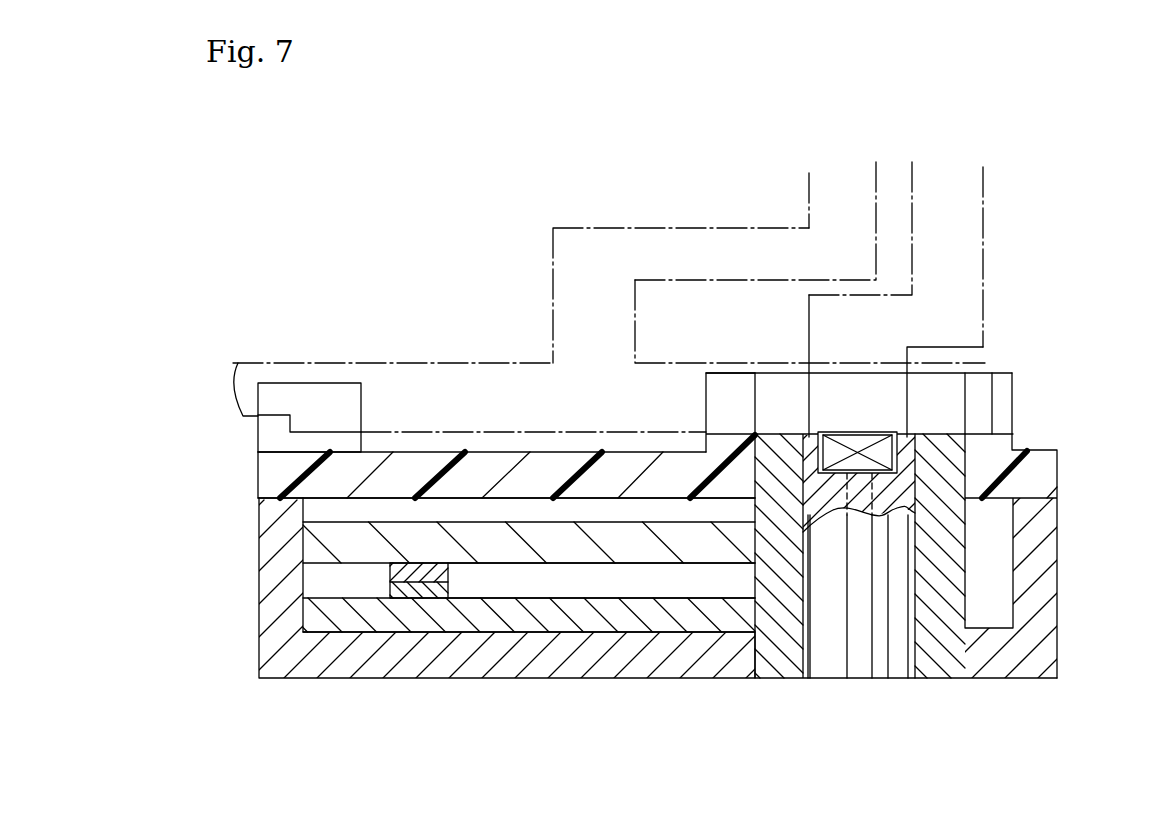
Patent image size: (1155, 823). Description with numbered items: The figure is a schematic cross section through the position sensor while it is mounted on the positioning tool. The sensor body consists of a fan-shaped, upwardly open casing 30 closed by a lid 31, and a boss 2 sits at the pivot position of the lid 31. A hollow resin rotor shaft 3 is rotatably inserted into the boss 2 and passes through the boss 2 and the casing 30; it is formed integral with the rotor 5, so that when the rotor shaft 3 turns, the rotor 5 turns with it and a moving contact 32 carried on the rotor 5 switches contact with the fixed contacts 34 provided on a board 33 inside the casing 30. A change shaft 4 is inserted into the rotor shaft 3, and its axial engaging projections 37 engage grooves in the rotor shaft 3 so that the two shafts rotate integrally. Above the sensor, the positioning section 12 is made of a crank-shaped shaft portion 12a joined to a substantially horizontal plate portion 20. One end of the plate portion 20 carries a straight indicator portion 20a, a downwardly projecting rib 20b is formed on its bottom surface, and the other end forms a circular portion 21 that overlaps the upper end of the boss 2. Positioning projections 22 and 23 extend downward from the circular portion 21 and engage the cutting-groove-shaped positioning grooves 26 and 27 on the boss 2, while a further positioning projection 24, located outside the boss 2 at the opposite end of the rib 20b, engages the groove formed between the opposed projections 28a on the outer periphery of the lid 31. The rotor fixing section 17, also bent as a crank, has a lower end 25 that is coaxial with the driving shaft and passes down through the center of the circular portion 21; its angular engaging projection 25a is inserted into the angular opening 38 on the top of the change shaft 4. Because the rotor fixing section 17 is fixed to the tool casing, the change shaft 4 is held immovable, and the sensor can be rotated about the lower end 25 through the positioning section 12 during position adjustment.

The boss 2 is at (1000, 405).
The rotor shaft 3 is at (777, 643).
The change shaft 4 is at (820, 660).
The rotor 5 is at (618, 553).
The positioning section 12 is at (547, 208).
The shaft portion 12a is at (822, 192).
The rotor fixing section 17 is at (972, 238).
The plate portion 20 is at (442, 362).
The indicator portion 20a is at (265, 363).
The rib 20b is at (383, 490).
The circular portion 21 is at (678, 362).
The positioning projection 22 is at (983, 422).
The positioning projection 23 is at (645, 420).
The positioning projection 24 is at (330, 432).
The lower end 25 is at (822, 328).
The engaging projection 25a is at (967, 465).
The positioning groove 26 is at (985, 380).
The positioning groove 27 is at (730, 390).
The opposed projection 28a is at (352, 398).
The casing 30 is at (278, 637).
The lid 31 is at (520, 456).
The moving contact 32 is at (390, 577).
The board 33 is at (468, 618).
The fixed contact 34 is at (447, 587).
The engaging projection 37 is at (858, 663).
The angular opening 38 is at (883, 450).